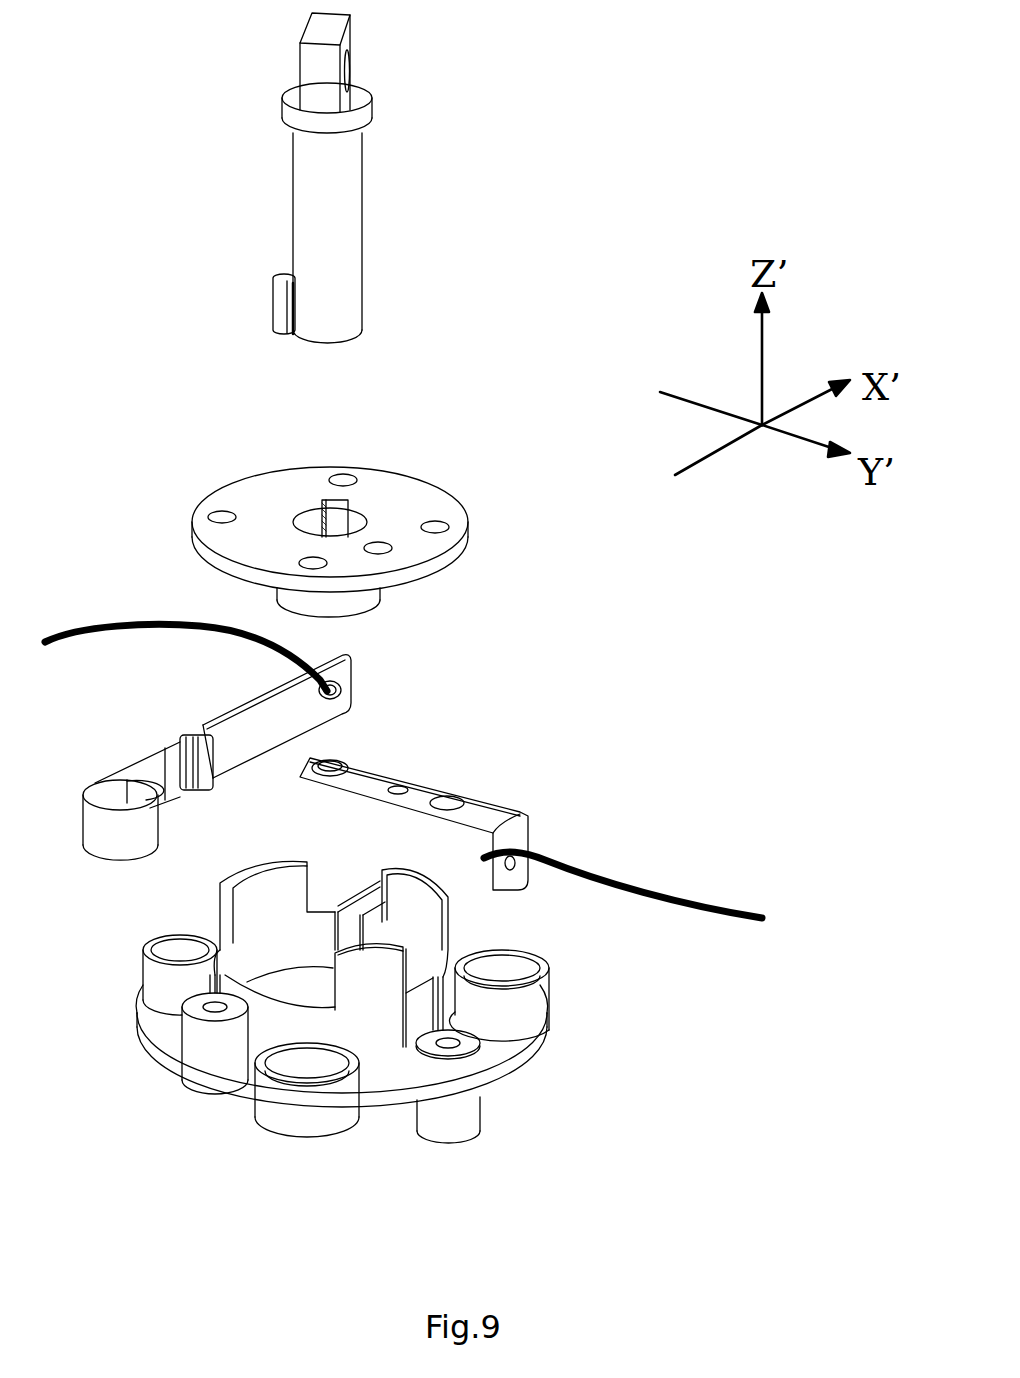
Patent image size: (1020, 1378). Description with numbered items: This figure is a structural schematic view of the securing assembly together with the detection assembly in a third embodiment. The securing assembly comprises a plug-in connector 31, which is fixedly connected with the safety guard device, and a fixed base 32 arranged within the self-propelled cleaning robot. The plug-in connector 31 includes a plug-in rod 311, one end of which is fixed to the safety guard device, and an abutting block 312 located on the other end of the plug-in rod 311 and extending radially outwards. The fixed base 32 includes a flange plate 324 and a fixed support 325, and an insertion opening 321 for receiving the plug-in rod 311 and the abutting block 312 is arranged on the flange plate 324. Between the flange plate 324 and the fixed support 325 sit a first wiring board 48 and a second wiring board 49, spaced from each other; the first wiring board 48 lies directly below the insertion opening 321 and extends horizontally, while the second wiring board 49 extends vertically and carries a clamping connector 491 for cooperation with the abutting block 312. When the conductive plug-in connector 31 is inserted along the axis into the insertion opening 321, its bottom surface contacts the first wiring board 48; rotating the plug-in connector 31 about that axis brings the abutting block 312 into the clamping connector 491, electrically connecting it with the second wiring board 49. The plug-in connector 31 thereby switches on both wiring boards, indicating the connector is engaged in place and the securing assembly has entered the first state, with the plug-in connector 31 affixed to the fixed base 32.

The plug-in connector 31 is at (343, 317).
The plug-in rod 311 is at (335, 197).
The abutting block 312 is at (283, 300).
The insertion opening 321 is at (315, 525).
The flange plate 324 is at (400, 520).
The second wiring board 49 is at (347, 698).
The clamping connector 491 is at (178, 745).
The first wiring board 48 is at (423, 795).
The fixed base 32 is at (253, 1052).
The fixed support 325 is at (407, 1075).